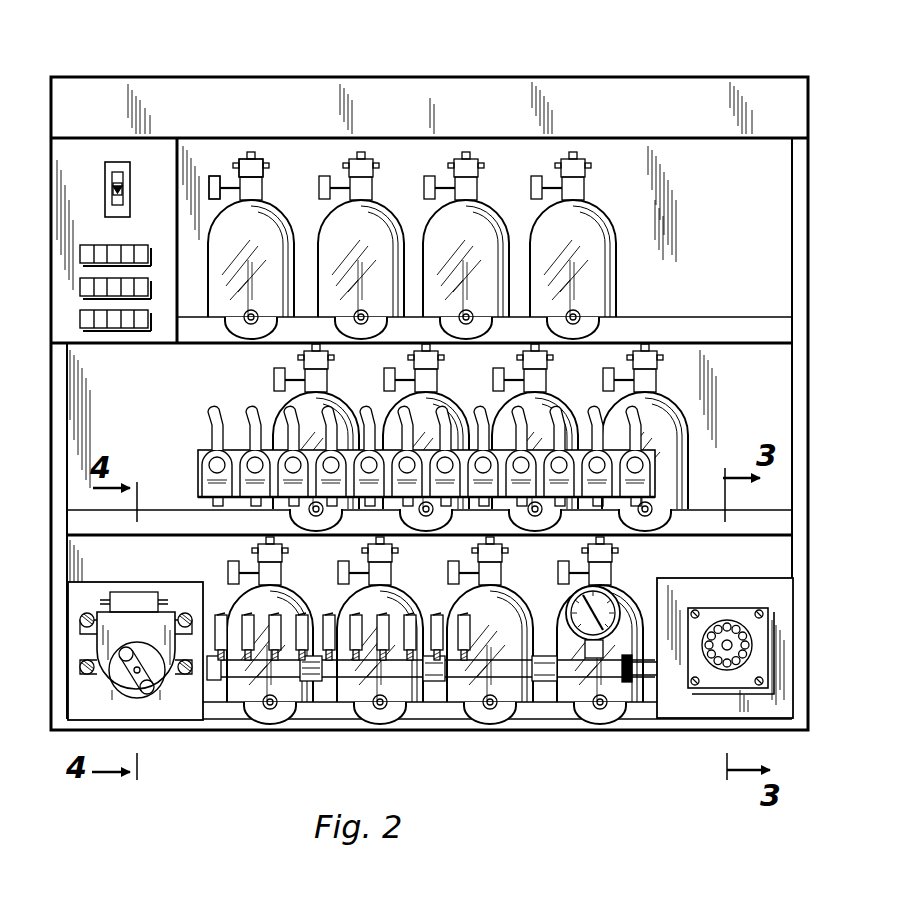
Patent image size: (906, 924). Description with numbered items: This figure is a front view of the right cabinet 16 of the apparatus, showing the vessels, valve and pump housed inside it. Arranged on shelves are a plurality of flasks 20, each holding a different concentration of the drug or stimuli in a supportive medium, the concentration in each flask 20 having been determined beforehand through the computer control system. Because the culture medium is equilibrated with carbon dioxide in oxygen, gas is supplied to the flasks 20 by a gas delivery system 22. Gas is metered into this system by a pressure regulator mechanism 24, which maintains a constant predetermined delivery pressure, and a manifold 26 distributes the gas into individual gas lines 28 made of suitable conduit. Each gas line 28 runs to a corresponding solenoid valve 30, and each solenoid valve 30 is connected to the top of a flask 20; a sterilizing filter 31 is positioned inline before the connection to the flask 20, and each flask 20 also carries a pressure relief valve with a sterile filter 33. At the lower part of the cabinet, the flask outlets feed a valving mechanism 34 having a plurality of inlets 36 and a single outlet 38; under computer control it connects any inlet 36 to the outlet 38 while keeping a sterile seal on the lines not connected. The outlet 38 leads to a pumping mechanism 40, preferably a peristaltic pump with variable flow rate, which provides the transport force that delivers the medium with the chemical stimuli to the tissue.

The right cabinet 16 is at (549, 75).
The flasks 20 is at (324, 213).
The gas delivery system 22 is at (436, 684).
The pressure regulator mechanism 24 is at (634, 682).
The manifold 26 is at (328, 682).
The gas lines 28 is at (226, 614).
The solenoid valve 30 is at (262, 498).
The sterilizing filter 31 is at (262, 166).
The pressure relief valve with sterile filter 33 is at (219, 172).
The valving mechanism 34 is at (786, 653).
The inlets 36 is at (726, 623).
The outlet 38 is at (733, 640).
The pumping mechanism 40 is at (147, 698).